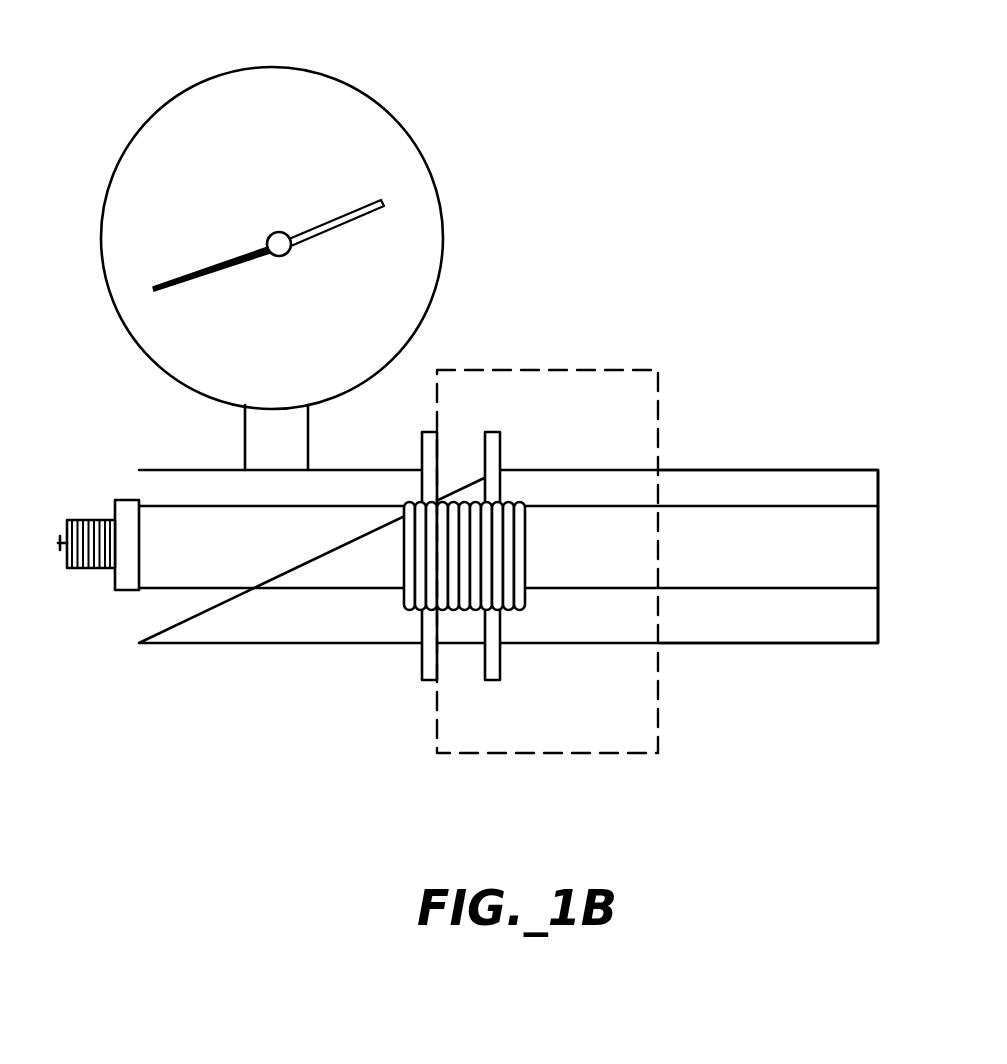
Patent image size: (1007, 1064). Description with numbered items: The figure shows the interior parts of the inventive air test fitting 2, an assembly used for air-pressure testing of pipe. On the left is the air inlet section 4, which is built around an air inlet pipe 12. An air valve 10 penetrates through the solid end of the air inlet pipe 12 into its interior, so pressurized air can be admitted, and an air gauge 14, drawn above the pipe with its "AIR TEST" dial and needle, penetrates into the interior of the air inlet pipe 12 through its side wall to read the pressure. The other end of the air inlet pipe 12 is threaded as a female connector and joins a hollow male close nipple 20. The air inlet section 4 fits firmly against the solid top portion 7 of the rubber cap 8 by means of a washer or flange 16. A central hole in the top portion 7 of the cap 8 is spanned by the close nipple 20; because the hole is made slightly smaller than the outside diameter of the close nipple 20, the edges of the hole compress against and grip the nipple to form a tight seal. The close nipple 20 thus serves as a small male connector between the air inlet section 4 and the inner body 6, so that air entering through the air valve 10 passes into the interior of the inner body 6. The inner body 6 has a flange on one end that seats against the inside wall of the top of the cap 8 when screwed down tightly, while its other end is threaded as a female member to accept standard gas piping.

The air test fitting 2 is at (748, 191).
The air inlet section 4 is at (428, 682).
The inner body 6 is at (732, 647).
The top portion of the cap 7 is at (452, 727).
The rubber cap 8 is at (515, 753).
The air valve 10 is at (98, 520).
The air inlet pipe 12 is at (332, 557).
The air gauge 14 is at (337, 80).
The washer or flange 16 is at (422, 455).
The close nipple 20 is at (453, 500).